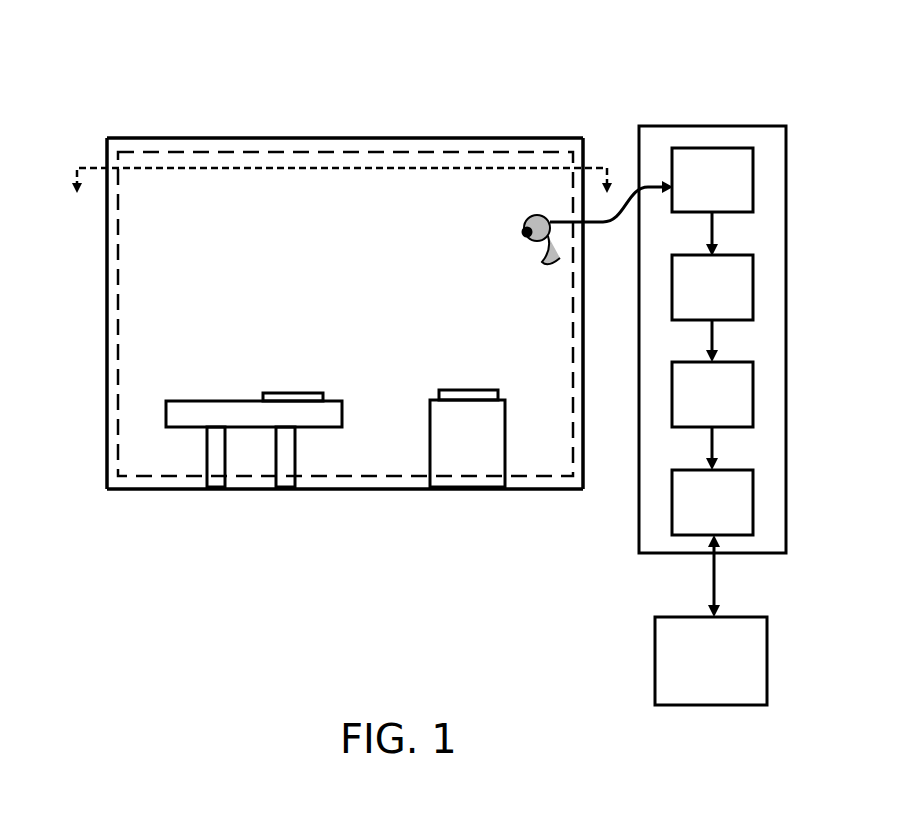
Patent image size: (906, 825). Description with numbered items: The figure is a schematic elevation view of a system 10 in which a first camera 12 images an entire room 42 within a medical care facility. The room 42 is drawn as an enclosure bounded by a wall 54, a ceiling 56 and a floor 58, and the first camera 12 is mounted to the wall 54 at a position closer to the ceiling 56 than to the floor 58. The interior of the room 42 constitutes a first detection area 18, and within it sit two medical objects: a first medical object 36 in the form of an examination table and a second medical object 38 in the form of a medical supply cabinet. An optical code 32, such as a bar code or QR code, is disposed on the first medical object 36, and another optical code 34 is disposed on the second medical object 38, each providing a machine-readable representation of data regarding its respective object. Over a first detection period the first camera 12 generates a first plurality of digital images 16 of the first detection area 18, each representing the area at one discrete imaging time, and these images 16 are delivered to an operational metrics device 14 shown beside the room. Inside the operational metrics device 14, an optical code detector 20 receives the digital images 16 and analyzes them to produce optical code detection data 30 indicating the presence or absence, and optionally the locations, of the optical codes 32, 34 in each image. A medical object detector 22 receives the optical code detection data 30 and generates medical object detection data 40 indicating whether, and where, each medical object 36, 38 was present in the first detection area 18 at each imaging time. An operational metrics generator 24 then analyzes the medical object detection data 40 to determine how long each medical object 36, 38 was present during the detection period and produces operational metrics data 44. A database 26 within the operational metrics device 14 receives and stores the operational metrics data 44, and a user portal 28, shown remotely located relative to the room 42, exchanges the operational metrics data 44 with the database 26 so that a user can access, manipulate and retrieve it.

The system 10 is at (205, 90).
The first camera 12 is at (522, 244).
The operational metrics device 14 is at (680, 126).
The first plurality of digital images 16 is at (603, 225).
The first detection area 18 is at (118, 343).
The optical code detector 20 is at (712, 180).
The medical object detector 22 is at (712, 287).
The operational metrics generator 24 is at (712, 394).
The database 26 is at (712, 502).
The user portal 28 is at (711, 661).
The optical code detection data 30 is at (712, 233).
The optical code 32 is at (285, 393).
The optical code 34 is at (476, 390).
The first medical object 36 is at (200, 401).
The second medical object 38 is at (430, 405).
The medical object detection data 40 is at (712, 339).
The room 42 is at (106, 276).
The operational metrics data 44 is at (712, 447).
The wall 54 is at (584, 368).
The ceiling 56 is at (497, 138).
The floor 58 is at (528, 490).